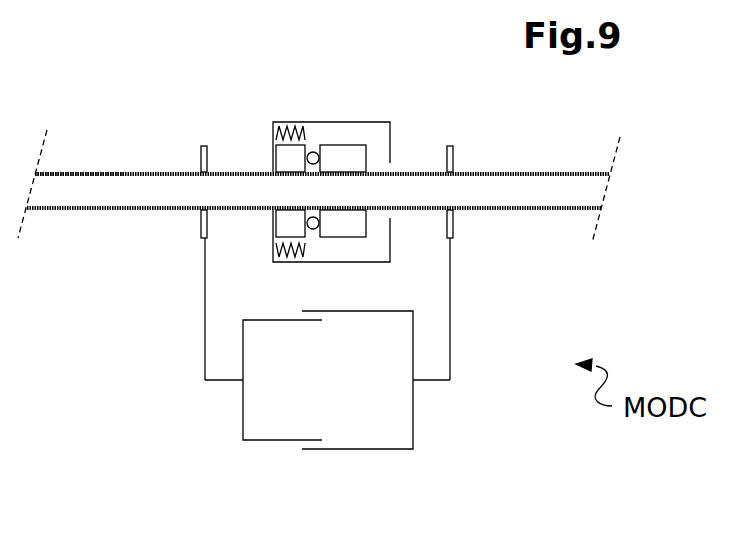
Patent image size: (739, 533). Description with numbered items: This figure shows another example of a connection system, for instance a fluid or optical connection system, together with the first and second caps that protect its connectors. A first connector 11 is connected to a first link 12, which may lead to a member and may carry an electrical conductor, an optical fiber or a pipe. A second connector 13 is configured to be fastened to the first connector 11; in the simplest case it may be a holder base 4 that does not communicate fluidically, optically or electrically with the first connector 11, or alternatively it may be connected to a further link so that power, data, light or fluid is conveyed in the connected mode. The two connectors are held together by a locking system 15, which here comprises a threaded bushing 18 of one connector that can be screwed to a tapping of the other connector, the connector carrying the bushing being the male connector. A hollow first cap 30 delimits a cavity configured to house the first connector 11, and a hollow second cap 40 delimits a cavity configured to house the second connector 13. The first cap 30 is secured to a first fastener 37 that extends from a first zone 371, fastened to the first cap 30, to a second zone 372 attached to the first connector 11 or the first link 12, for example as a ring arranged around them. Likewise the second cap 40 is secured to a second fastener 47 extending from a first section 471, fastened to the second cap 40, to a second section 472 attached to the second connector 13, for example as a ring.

The holder base 4 is at (533, 188).
The first link 12 is at (125, 172).
The first connector 11 is at (278, 158).
The second connector 13 is at (357, 158).
The locking system 15 is at (326, 107).
The threaded bushing 18 is at (368, 122).
The second section 472 is at (200, 222).
The second zone 372 is at (452, 225).
The second fastener 47 is at (205, 348).
The first section 471 is at (240, 383).
The first fastener 37 is at (450, 315).
The first zone 371 is at (428, 383).
The second cap 40 is at (258, 445).
The first cap 30 is at (413, 435).